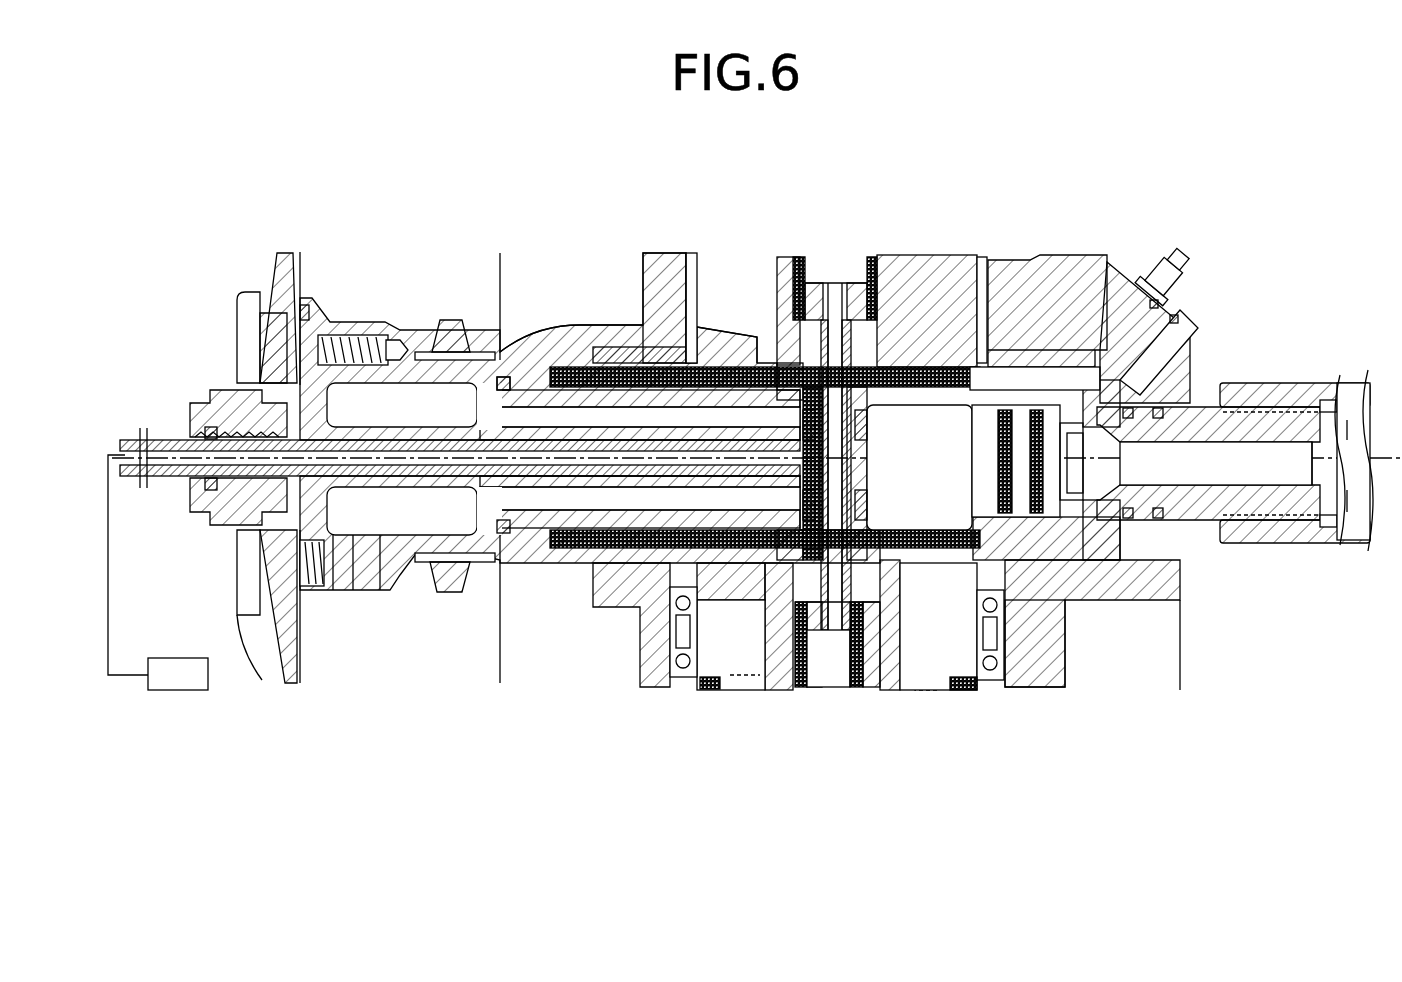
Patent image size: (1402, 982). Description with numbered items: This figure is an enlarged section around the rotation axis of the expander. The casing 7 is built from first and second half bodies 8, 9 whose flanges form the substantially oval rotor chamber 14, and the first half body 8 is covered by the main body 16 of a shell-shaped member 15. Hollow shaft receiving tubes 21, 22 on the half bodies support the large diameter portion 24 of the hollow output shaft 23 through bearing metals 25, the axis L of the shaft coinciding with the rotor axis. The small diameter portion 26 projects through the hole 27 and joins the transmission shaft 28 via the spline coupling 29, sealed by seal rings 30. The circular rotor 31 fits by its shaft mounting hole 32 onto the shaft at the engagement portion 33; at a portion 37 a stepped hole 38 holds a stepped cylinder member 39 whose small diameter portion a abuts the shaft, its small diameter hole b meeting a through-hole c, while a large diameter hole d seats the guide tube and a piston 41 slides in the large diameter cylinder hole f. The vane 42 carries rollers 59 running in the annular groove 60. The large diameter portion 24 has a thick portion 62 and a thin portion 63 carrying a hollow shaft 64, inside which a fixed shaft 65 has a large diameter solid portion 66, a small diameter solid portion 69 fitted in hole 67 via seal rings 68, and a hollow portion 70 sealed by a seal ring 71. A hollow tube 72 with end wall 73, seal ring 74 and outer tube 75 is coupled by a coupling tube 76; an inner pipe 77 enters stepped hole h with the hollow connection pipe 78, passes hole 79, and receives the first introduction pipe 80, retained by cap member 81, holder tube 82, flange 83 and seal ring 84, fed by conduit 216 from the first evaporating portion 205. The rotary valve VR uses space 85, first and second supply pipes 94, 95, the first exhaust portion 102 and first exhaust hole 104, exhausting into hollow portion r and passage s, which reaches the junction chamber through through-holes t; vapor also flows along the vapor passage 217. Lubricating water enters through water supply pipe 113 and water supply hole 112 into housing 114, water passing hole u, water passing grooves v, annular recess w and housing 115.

The casing 7 is at (1190, 330).
The first half body 8 is at (668, 250).
The second half body 9 is at (1020, 258).
The rotor chamber 14 is at (978, 265).
The shell-shaped member 15 is at (272, 262).
The main body 16 is at (252, 300).
The hollow shaft receiving tube 21 is at (575, 335).
The hollow shaft receiving tube 22 is at (1160, 380).
The hollow output shaft 23 is at (912, 365).
The large diameter portion 24 is at (955, 365).
The bearing metal 25 is at (645, 590).
The small diameter portion 26 is at (1195, 520).
The hole 27 is at (1160, 410).
The transmission shaft 28 is at (1348, 385).
The spline coupling 29 is at (1280, 540).
The seal rings 30 is at (1150, 540).
The circular rotor 31 is at (686, 275).
The shaft mounting hole 32 is at (770, 360).
The engagement portion 33 is at (718, 583).
The portion 37 is at (880, 290).
The stepped hole 38 is at (815, 290).
The stepped cylinder member 39 is at (805, 320).
The piston 41 is at (848, 677).
The vane 42 is at (922, 700).
The roller 59 is at (705, 690).
The annular groove 60 is at (670, 665).
The thick portion 62 is at (1015, 310).
The thin portion 63 is at (620, 560).
The hollow shaft 64 is at (630, 348).
The fixed shaft 65 is at (495, 590).
The large diameter solid portion 66 is at (950, 520).
The hole 67 is at (998, 425).
The seal rings 68 is at (1025, 555).
The small diameter solid portion 69 is at (985, 485).
The hollow portion 70 is at (565, 405).
The seal ring 71 is at (500, 512).
The hollow tube 72 is at (355, 322).
The end wall 73 is at (262, 575).
The seal ring 74 is at (312, 615).
The outer tube 75 is at (400, 345).
The coupling tube 76 is at (455, 322).
The inner pipe 77 is at (480, 432).
The hollow connection pipe 78 is at (730, 425).
The hole 79 is at (270, 500).
The first introduction pipe 80 is at (397, 495).
The cap member 81 is at (225, 392).
The holder tube 82 is at (190, 428).
The flange 83 is at (205, 490).
The seal ring 84 is at (265, 525).
The space 85 is at (862, 418).
The first supply pipe 94 is at (812, 445).
The second supply pipe 95 is at (870, 490).
The first exhaust portion 102 is at (775, 600).
The first exhaust hole 104 is at (730, 510).
The water supply hole 112 is at (1175, 320).
The water supply pipe 113 is at (1175, 252).
The housing 114 is at (1140, 320).
The housing 115 is at (560, 575).
The first evaporating portion 205 is at (180, 690).
The conduit 216 is at (112, 630).
The vapor passage 217 is at (430, 630).
The small diameter portion a is at (800, 350).
The small diameter hole b is at (835, 300).
The through-hole c is at (875, 395).
The large diameter hole d is at (862, 280).
The large diameter cylinder hole f is at (830, 280).
The stepped hole h is at (665, 455).
The hollow portion r is at (540, 580).
The passage s is at (403, 618).
The through-holes t is at (368, 600).
The water passing hole u is at (1045, 380).
The water passing grooves v is at (905, 570).
The annular recess w is at (980, 395).
The axis L is at (1331, 584).
The rotary valve VR is at (731, 286).